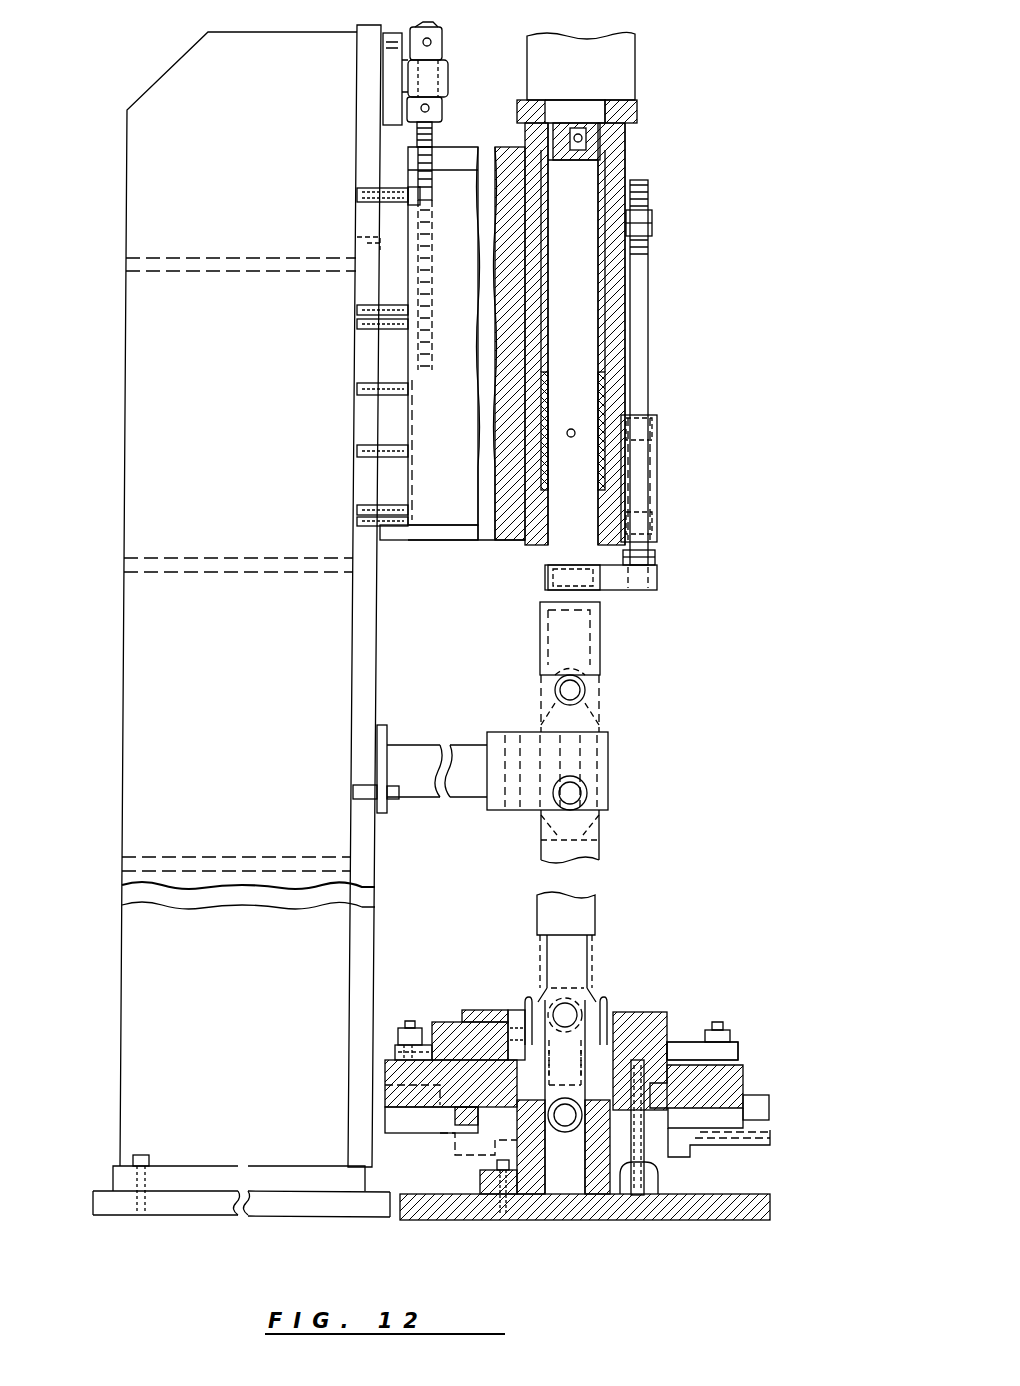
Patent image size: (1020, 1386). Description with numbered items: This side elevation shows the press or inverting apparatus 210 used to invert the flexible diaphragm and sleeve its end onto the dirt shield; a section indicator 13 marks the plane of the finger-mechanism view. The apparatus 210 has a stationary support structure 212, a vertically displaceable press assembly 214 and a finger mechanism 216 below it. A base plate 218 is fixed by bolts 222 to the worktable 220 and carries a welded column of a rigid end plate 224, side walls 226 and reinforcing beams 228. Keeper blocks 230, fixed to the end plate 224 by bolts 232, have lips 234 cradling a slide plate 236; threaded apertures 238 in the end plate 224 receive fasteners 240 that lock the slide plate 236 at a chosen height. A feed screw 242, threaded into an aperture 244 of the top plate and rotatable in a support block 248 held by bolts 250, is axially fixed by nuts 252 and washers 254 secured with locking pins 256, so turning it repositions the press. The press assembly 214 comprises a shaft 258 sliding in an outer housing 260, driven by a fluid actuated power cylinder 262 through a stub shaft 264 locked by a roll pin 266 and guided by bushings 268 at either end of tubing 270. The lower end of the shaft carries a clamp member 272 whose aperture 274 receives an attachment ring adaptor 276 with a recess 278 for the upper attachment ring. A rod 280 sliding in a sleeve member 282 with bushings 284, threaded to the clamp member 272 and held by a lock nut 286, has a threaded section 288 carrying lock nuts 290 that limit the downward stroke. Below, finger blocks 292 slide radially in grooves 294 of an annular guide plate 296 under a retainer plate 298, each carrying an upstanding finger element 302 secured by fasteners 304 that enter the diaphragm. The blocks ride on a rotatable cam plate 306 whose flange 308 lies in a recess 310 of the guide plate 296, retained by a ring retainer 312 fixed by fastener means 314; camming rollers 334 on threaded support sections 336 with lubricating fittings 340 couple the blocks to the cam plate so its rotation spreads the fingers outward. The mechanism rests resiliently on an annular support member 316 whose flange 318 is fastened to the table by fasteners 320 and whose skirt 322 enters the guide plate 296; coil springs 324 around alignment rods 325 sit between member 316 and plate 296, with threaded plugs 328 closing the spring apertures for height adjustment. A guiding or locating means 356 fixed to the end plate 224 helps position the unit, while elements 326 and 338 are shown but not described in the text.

The section line 13 is at (630, 966).
The press or inverting apparatus 210 is at (640, 663).
The support structure 212 is at (260, 538).
The press assembly 214 is at (710, 140).
The finger mechanism 216 is at (695, 980).
The base plate 218 is at (195, 1166).
The worktable 220 is at (270, 1217).
The bolts 222 is at (133, 1158).
The end plate 224 is at (376, 650).
The side wall 226 is at (122, 680).
The reinforcing beams 228 is at (225, 265).
The keeper blocks 230 is at (415, 428).
The bolts 232 is at (365, 322).
The lip or flange 234 is at (415, 400).
The slide plate 236 is at (408, 285).
The threaded apertures 238 is at (370, 232).
The fasteners 240 is at (432, 190).
The feed screw 242 is at (432, 128).
The aperture 244 is at (465, 170).
The support block 248 is at (448, 85).
The bolts 250 is at (383, 48).
The nuts 252 is at (442, 65).
The washers 254 is at (408, 70).
The locking pins 256 is at (432, 42).
The shaft 258 is at (575, 334).
The outer housing 260 is at (622, 312).
The power cylinder 262 is at (581, 66).
The stub shaft 264 is at (605, 150).
The roll pin 266 is at (600, 135).
The bushings 268 is at (605, 360).
The tubing 270 is at (605, 400).
The clamp member 272 is at (657, 583).
The aperture 274 is at (548, 580).
The attachment ring adaptor 276 is at (540, 660).
The recess 278 is at (540, 626).
The rod 280 is at (648, 278).
The sleeve member 282 is at (657, 465).
The bushings 284 is at (657, 423).
The lock nut 286 is at (655, 556).
The threaded section 288 is at (648, 243).
The lock nuts 290 is at (652, 210).
The finger blocks 292 is at (432, 1022).
The grooves 294 is at (650, 1012).
The guide plate 296 is at (672, 1042).
The retainer plate 298 is at (537, 985).
The finger element 302 is at (540, 1000).
The fastener elements 304 is at (528, 995).
The cam plate 306 is at (738, 1048).
The flange section 308 is at (667, 1088).
The recess 310 is at (665, 1145).
The retainer element 312 is at (455, 1120).
The fastener means 314 is at (455, 1150).
The support member 316 is at (540, 1172).
The flange 318 is at (480, 1178).
The fasteners 320 is at (508, 1217).
The skirt or sleeve portion 322 is at (530, 1150).
The coil spring elements 324 is at (642, 1195).
The alignment rod 325 is at (610, 1195).
The spring 326 is at (630, 1195).
The set screws or plugs 328 is at (612, 1052).
The camming roller 334 is at (385, 1088).
The threaded support section 336 is at (398, 1035).
The slot 338 is at (385, 1070).
The lubricating fitting 340 is at (440, 1040).
The guiding or locating means 356 is at (630, 774).